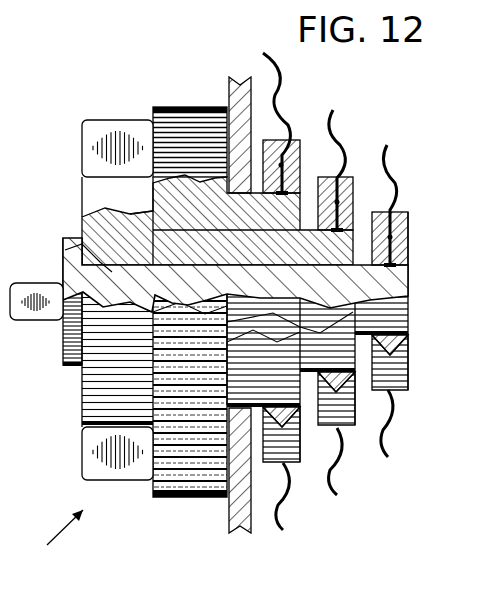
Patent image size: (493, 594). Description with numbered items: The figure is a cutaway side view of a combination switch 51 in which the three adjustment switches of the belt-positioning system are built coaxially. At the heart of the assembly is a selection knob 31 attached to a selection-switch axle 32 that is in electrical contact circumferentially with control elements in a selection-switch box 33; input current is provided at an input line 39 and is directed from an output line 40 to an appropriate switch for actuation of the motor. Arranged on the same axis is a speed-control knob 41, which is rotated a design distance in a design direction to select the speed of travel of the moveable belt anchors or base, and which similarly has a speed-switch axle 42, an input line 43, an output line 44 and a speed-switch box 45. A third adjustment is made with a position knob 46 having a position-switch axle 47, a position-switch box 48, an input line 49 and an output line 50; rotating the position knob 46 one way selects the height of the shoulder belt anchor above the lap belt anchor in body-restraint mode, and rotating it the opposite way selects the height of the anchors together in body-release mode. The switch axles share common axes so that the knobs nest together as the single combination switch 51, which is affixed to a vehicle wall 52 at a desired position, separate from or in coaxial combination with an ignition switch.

The selection knob 31 is at (173, 107).
The selection-switch axle 32 is at (227, 180).
The selection-switch box 33 is at (302, 139).
The input line 39 is at (296, 510).
The output line 40 is at (273, 113).
The speed-control knob 41 is at (82, 174).
The speed-switch axle 42 is at (137, 202).
The input line 43 is at (327, 497).
The output line 44 is at (352, 176).
The speed-switch box 45 is at (357, 176).
The position knob 46 is at (63, 323).
The position-switch axle 47 is at (63, 265).
The position-switch box 48 is at (380, 390).
The input line 49 is at (392, 422).
The output line 50 is at (388, 146).
The combination switch 51 is at (52, 540).
The vehicle wall 52 is at (233, 517).